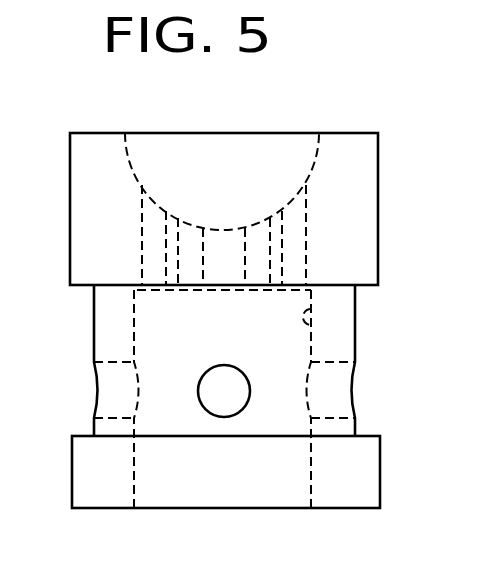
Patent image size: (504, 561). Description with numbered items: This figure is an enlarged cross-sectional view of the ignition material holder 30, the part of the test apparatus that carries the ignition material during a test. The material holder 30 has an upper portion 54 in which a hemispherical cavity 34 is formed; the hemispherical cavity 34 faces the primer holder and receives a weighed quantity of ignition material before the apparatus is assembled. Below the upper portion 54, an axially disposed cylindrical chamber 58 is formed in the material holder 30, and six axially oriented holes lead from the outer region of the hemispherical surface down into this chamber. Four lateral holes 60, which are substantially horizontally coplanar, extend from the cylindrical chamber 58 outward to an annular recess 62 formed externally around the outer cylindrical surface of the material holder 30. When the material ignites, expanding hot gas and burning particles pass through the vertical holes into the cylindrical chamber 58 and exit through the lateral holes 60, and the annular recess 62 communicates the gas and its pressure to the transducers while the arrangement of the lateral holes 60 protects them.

The ignition material holder 30 is at (379, 260).
The hemispherical cavity 34 is at (271, 161).
The upper portion 54 is at (378, 193).
The cylindrical chamber 58 is at (311, 332).
The lateral holes 60 is at (228, 364).
The annular recess 62 is at (92, 330).